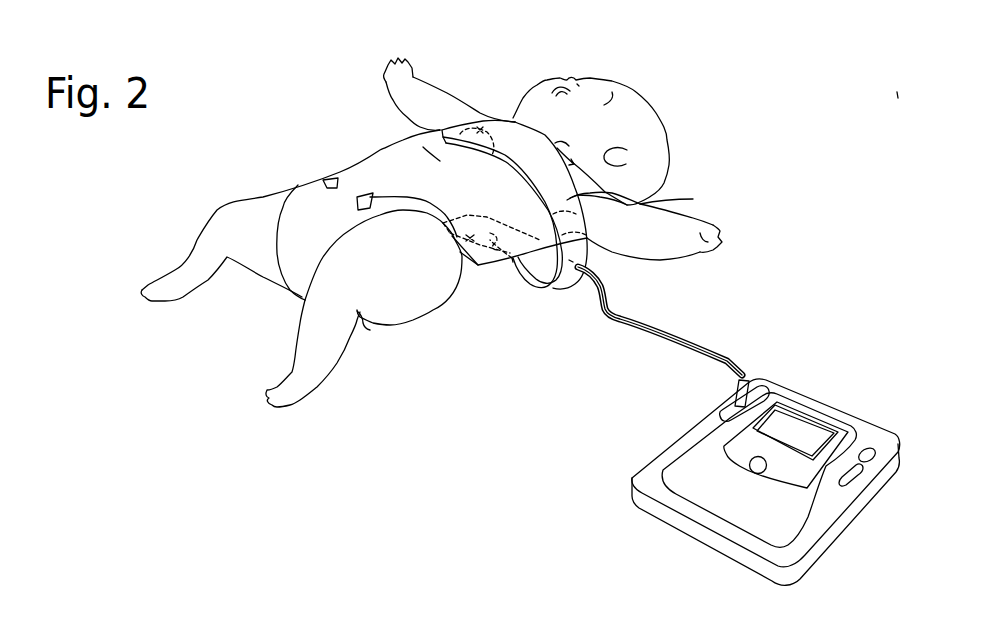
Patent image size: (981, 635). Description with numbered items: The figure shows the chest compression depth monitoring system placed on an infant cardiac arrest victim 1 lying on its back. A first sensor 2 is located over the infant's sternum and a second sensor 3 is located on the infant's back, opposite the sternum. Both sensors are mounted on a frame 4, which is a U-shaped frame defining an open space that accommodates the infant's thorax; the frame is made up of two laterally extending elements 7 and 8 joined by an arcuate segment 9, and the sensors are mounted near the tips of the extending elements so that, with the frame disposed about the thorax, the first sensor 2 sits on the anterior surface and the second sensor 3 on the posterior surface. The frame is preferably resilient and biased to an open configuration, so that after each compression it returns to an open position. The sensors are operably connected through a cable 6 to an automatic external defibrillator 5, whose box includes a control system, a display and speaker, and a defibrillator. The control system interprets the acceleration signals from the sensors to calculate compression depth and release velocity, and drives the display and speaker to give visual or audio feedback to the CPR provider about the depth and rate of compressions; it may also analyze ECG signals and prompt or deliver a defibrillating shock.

The infant cardiac arrest victim 1 is at (665, 62).
The first sensor 2 is at (480, 137).
The second sensor 3 is at (478, 265).
The frame 4 is at (431, 232).
The automatic external defibrillator 5 is at (817, 403).
The cable 6 is at (675, 333).
The laterally extending element 7 is at (528, 157).
The laterally extending element 8 is at (512, 260).
The arcuate segment 9 is at (571, 263).